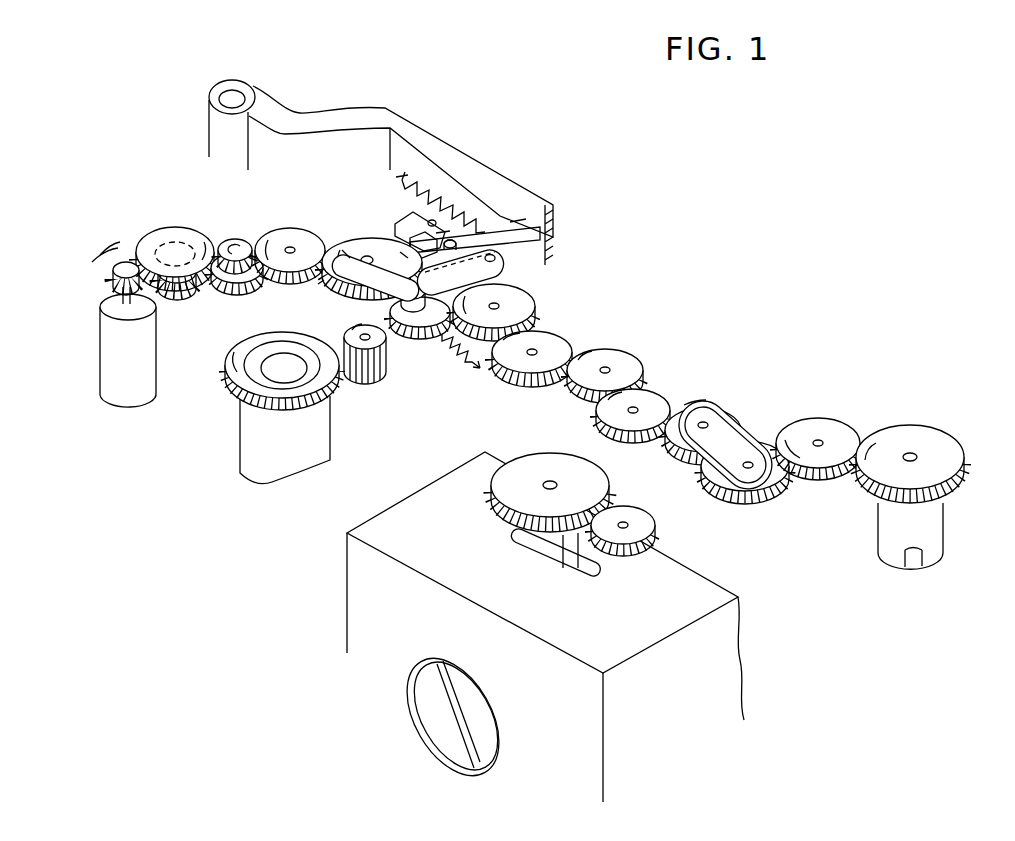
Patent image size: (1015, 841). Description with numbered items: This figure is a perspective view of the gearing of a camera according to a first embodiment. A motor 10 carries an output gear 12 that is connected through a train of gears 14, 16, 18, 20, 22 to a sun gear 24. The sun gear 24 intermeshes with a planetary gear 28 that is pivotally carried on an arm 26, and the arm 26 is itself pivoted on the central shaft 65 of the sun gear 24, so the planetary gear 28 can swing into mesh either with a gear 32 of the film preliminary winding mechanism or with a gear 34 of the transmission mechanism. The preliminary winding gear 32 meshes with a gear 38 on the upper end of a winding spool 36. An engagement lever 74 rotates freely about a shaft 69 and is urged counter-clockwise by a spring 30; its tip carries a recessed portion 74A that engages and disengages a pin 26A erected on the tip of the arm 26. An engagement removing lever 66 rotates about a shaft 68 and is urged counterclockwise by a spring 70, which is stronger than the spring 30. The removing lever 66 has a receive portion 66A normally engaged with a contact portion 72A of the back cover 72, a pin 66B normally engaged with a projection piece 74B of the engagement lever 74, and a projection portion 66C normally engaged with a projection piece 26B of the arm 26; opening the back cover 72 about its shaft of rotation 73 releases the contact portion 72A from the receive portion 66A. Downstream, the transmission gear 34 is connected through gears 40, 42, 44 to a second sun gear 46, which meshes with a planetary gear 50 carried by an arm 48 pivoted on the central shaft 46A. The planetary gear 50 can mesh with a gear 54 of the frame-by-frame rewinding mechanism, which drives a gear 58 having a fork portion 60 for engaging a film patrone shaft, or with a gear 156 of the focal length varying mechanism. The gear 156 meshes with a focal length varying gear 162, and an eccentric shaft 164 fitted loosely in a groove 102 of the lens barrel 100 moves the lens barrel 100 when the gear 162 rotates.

The motor 10 is at (98, 360).
The output gear 12 is at (112, 287).
The gear 14 is at (156, 231).
The gear 16 is at (178, 303).
The gear 18 is at (233, 291).
The gear 20 is at (230, 238).
The gear 22 is at (280, 238).
The sun gear 24 is at (320, 285).
The arm 26 is at (327, 243).
The pin 26A is at (415, 306).
The projection piece 26B is at (403, 255).
The planetary gear 28 is at (433, 340).
The spring 30 is at (463, 349).
The gear 32 is at (369, 384).
The gear 34 is at (527, 312).
The winding spool 36 is at (257, 443).
The gear 38 is at (243, 385).
The gear 40 is at (547, 364).
The gear 42 is at (627, 360).
The gear 44 is at (657, 402).
The sun gear 46 is at (719, 400).
The central shaft 46A is at (709, 424).
The arm 48 is at (737, 447).
The planetary gear 50 is at (735, 493).
The gear 54 is at (843, 432).
The gear 58 is at (943, 443).
The fork portion 60 is at (927, 523).
The central shaft 65 is at (347, 254).
The engagement removing lever 66 is at (442, 228).
The receive portion 66A is at (517, 220).
The pin 66B is at (443, 235).
The projection portion 66C is at (410, 232).
The shaft 68 is at (413, 212).
The shaft 69 is at (496, 259).
The spring 70 is at (418, 178).
The back cover 72 is at (416, 133).
The contact portion 72A is at (548, 232).
The shaft of rotation 73 is at (228, 94).
The engagement lever 74 is at (510, 266).
The recessed portion 74A is at (360, 310).
The projection piece 74B is at (463, 243).
The lens barrel 100 is at (727, 680).
The groove 102 is at (543, 545).
The gear 156 is at (648, 525).
The focal length varying gear 162 is at (603, 487).
The eccentric shaft 164 is at (572, 556).